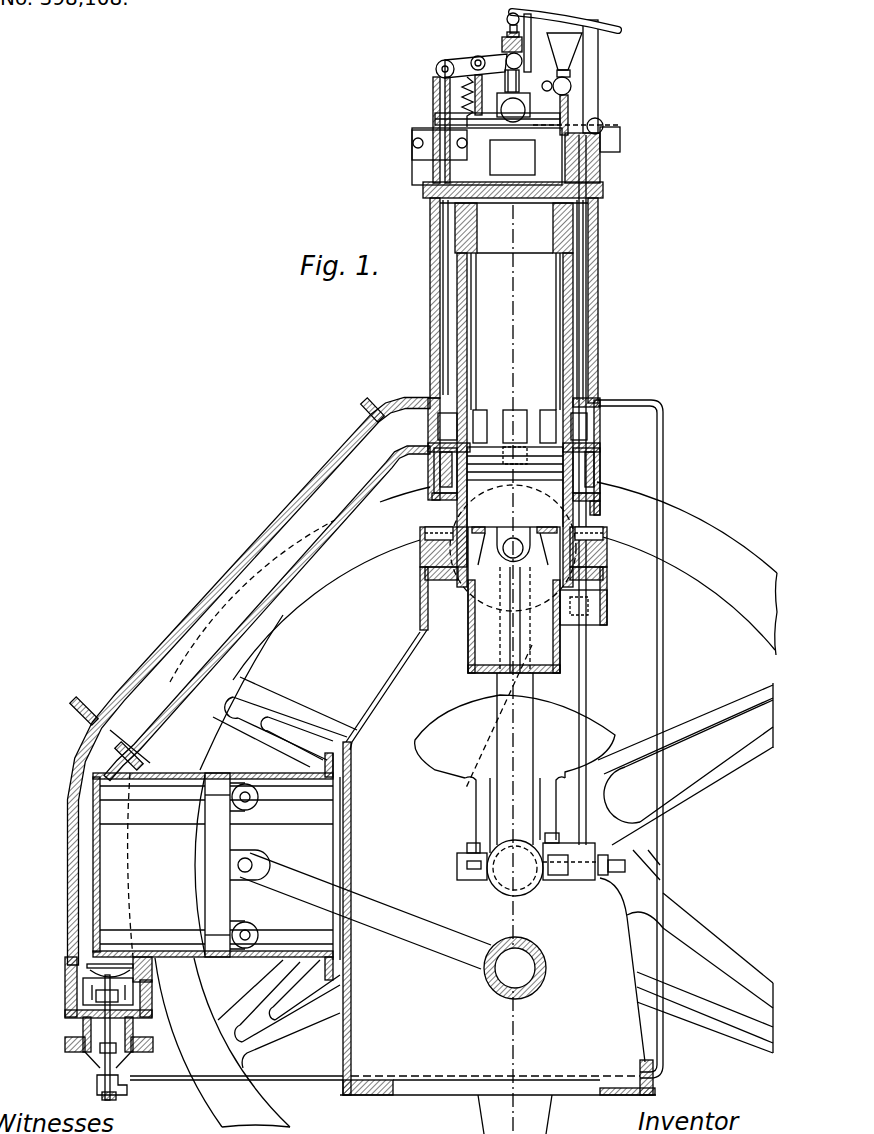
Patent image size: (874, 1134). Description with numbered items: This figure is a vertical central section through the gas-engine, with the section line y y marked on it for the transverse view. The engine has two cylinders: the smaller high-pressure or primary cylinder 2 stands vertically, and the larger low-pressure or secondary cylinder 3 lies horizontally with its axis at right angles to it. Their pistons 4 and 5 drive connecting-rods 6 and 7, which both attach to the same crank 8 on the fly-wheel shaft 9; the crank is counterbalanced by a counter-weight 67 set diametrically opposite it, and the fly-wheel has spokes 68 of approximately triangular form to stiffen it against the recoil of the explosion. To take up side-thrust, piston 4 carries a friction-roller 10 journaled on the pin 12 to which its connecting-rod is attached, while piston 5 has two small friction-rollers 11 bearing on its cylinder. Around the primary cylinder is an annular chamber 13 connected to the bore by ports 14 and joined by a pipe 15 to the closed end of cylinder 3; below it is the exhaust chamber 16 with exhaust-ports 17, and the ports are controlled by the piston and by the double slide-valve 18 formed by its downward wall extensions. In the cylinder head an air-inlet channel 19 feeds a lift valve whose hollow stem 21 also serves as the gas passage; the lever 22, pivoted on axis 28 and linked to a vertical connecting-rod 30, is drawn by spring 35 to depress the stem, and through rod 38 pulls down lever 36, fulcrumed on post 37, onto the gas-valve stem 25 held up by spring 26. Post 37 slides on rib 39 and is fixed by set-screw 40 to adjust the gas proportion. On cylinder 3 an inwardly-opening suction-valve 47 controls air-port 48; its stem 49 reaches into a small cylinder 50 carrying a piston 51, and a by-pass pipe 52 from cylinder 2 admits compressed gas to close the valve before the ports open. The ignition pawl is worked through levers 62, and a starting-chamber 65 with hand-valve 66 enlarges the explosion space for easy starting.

The high-pressure cylinder 2 is at (513, 490).
The low-pressure cylinder 3 is at (216, 856).
The piston 4 is at (503, 466).
The piston 5 is at (232, 865).
The connecting-rod 6 is at (499, 745).
The connecting-rod 7 is at (365, 911).
The crank 8 is at (540, 962).
The fly-wheel shaft 9 is at (541, 864).
The friction-roller 10 is at (533, 518).
The friction-rollers 11 is at (252, 808).
The pin 12 is at (513, 548).
The annular chamber 13 is at (512, 425).
The ports 14 is at (514, 426).
The pipe 15 is at (249, 682).
The exhaust chamber 16 is at (570, 470).
The exhaust-ports 17 is at (515, 455).
The double slide-valve 18 is at (513, 600).
The air-inlet channel 19 is at (506, 131).
The hollow valve-stem 21 is at (528, 82).
The lever 22 is at (462, 62).
The gas-valve stem 25 is at (506, 20).
The encircling spring 26 is at (506, 35).
The axis 28 is at (436, 70).
The vertical connecting-rod 30 is at (483, 85).
The spring 35 is at (460, 96).
The lever 36 is at (565, 36).
The post 37 is at (598, 80).
The rod 38 is at (524, 46).
The rib 39 is at (620, 140).
The set-screw 40 is at (603, 121).
The suction-valve 47 is at (88, 970).
The air-port 48 is at (90, 990).
The valve-stem 49 is at (100, 1063).
The small cylinder 50 is at (125, 1090).
The piston 51 is at (104, 1097).
The by-pass pipe 52 is at (663, 485).
The levers 62 is at (530, 110).
The starting-chamber 65 is at (564, 84).
The hand-valve 66 is at (548, 81).
The counter-weight 67 is at (515, 774).
The spokes 68 is at (322, 710).
The section line y is at (598, 208).